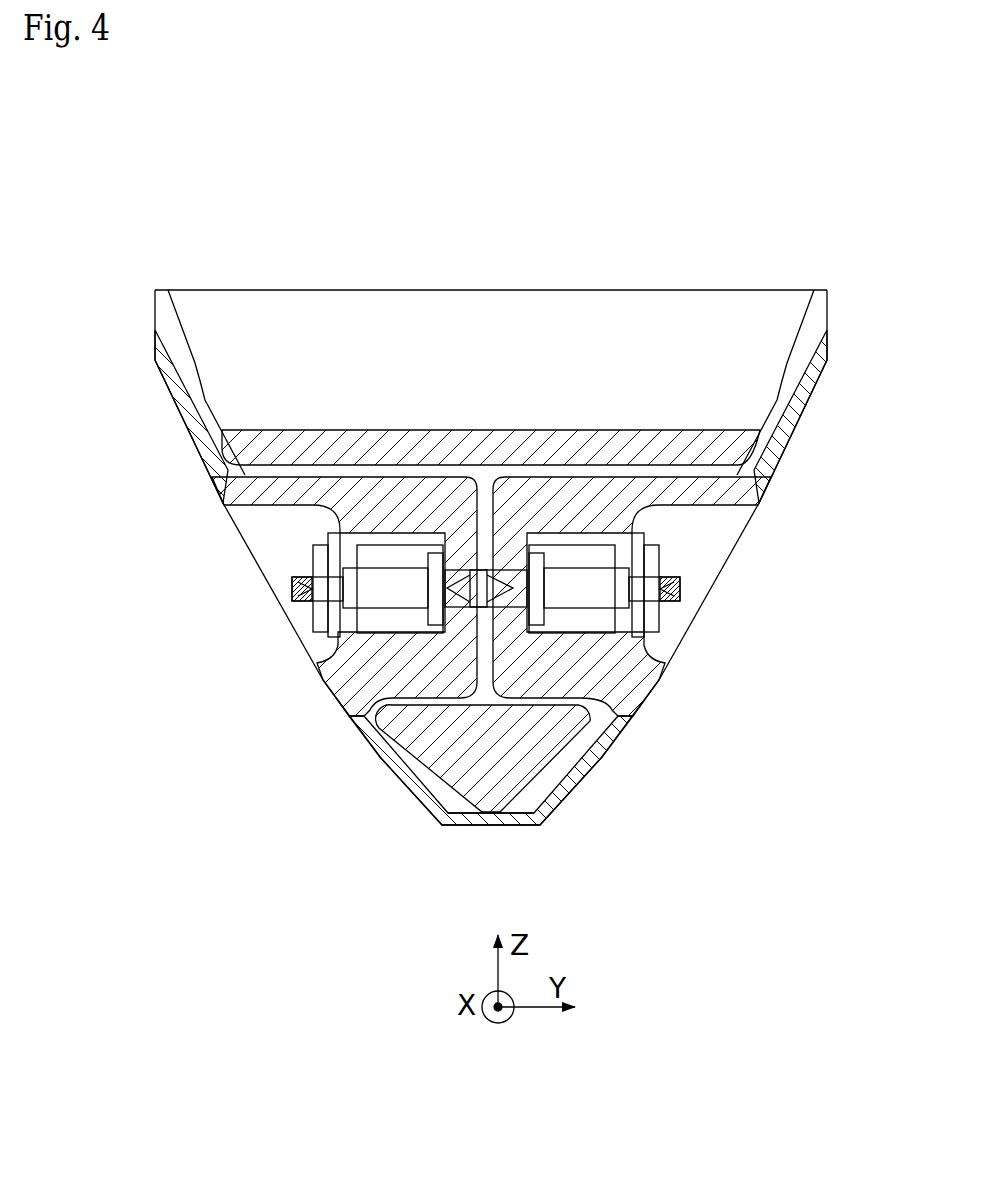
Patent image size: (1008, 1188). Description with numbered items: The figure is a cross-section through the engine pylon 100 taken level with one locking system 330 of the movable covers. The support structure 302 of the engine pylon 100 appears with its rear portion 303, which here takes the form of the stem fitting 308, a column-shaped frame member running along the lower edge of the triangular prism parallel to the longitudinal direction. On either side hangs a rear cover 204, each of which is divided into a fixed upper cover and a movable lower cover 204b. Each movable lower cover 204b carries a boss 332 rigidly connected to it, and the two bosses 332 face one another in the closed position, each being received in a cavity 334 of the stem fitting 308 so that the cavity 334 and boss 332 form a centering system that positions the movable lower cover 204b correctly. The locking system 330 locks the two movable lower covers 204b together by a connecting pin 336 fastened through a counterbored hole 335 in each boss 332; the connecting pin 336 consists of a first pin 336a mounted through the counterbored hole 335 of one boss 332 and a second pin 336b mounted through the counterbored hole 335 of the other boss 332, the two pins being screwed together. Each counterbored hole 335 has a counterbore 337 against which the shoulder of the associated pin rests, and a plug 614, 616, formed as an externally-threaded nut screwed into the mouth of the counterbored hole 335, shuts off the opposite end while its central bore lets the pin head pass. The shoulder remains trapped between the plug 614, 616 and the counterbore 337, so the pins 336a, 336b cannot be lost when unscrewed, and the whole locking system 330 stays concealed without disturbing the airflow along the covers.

The engine pylon 100 is at (665, 248).
The support structure 302 is at (192, 252).
The rear portion 303 is at (341, 255).
The rear cover 204 is at (238, 823).
The movable lower cover 204b is at (650, 683).
The cavity 334 is at (752, 462).
The counterbored hole 335 is at (390, 632).
The boss 332 is at (612, 720).
The stem fitting 308 is at (490, 805).
The locking system 330 is at (664, 860).
The counterbore 337 is at (418, 758).
The connecting pin 336 is at (764, 570).
The first pin 336a is at (650, 590).
The second pin 336b is at (293, 596).
The plug 614 is at (632, 628).
The plug 616 is at (337, 627).